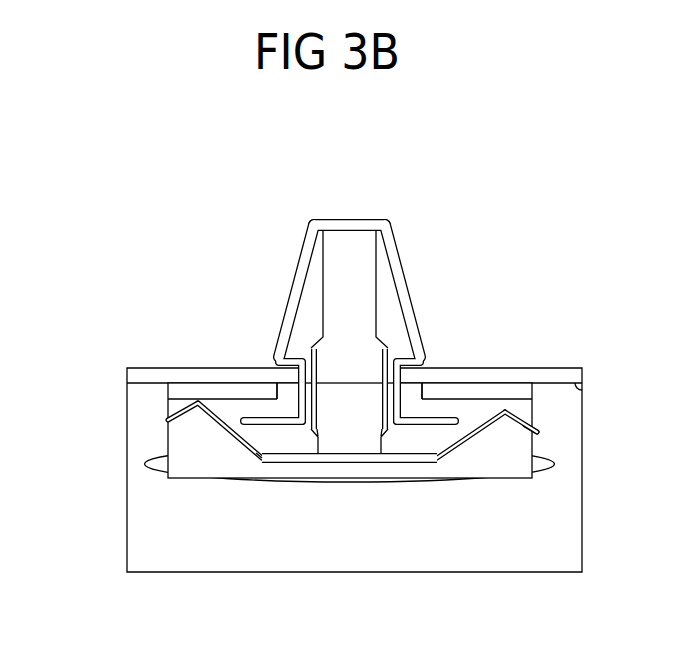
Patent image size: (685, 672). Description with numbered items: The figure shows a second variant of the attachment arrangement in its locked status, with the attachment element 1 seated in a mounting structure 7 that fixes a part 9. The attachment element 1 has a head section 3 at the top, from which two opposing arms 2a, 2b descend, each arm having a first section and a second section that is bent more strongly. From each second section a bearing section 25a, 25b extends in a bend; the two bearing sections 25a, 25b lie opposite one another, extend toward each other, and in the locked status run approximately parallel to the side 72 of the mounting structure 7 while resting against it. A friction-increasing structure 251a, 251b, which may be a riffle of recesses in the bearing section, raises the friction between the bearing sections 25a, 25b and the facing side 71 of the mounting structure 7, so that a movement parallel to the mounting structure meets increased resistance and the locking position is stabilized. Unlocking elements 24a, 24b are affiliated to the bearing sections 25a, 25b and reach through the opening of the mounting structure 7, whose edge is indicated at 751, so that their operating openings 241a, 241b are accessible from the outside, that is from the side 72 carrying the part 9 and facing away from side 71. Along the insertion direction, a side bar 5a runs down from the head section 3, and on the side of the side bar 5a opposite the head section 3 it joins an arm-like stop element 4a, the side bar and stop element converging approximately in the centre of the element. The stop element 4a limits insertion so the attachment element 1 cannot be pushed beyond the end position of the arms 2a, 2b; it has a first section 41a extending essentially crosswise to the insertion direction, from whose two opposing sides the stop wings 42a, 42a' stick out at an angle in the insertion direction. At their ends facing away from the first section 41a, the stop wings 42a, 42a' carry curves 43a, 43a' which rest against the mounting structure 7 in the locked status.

The attachment element 1 is at (303, 218).
The head section 3 is at (343, 219).
The arm 2a is at (397, 263).
The arm 2b is at (297, 277).
The bearing section 25a is at (402, 350).
The bearing section 25b is at (283, 352).
The friction-increasing structure 251a is at (405, 365).
The friction-increasing structure 251b is at (295, 393).
The unlocking element 24a is at (404, 400).
The unlocking element 24b is at (278, 383).
The side bar 5a is at (360, 363).
The panel hole edge 751 is at (405, 368).
The mounting structure 7 is at (528, 375).
The side of the mounting structure 72 is at (573, 368).
The side of the mounting structure 71 is at (583, 390).
The part to be fixed 9 is at (532, 398).
The curve 43a is at (589, 434).
The operating opening 241a is at (533, 432).
The stop wing 42a is at (546, 480).
The curve 43a' is at (135, 494).
The stop wing 42a' is at (213, 523).
The operating opening 241b is at (268, 425).
The first section 41a is at (312, 464).
The stop element 4a is at (397, 463).